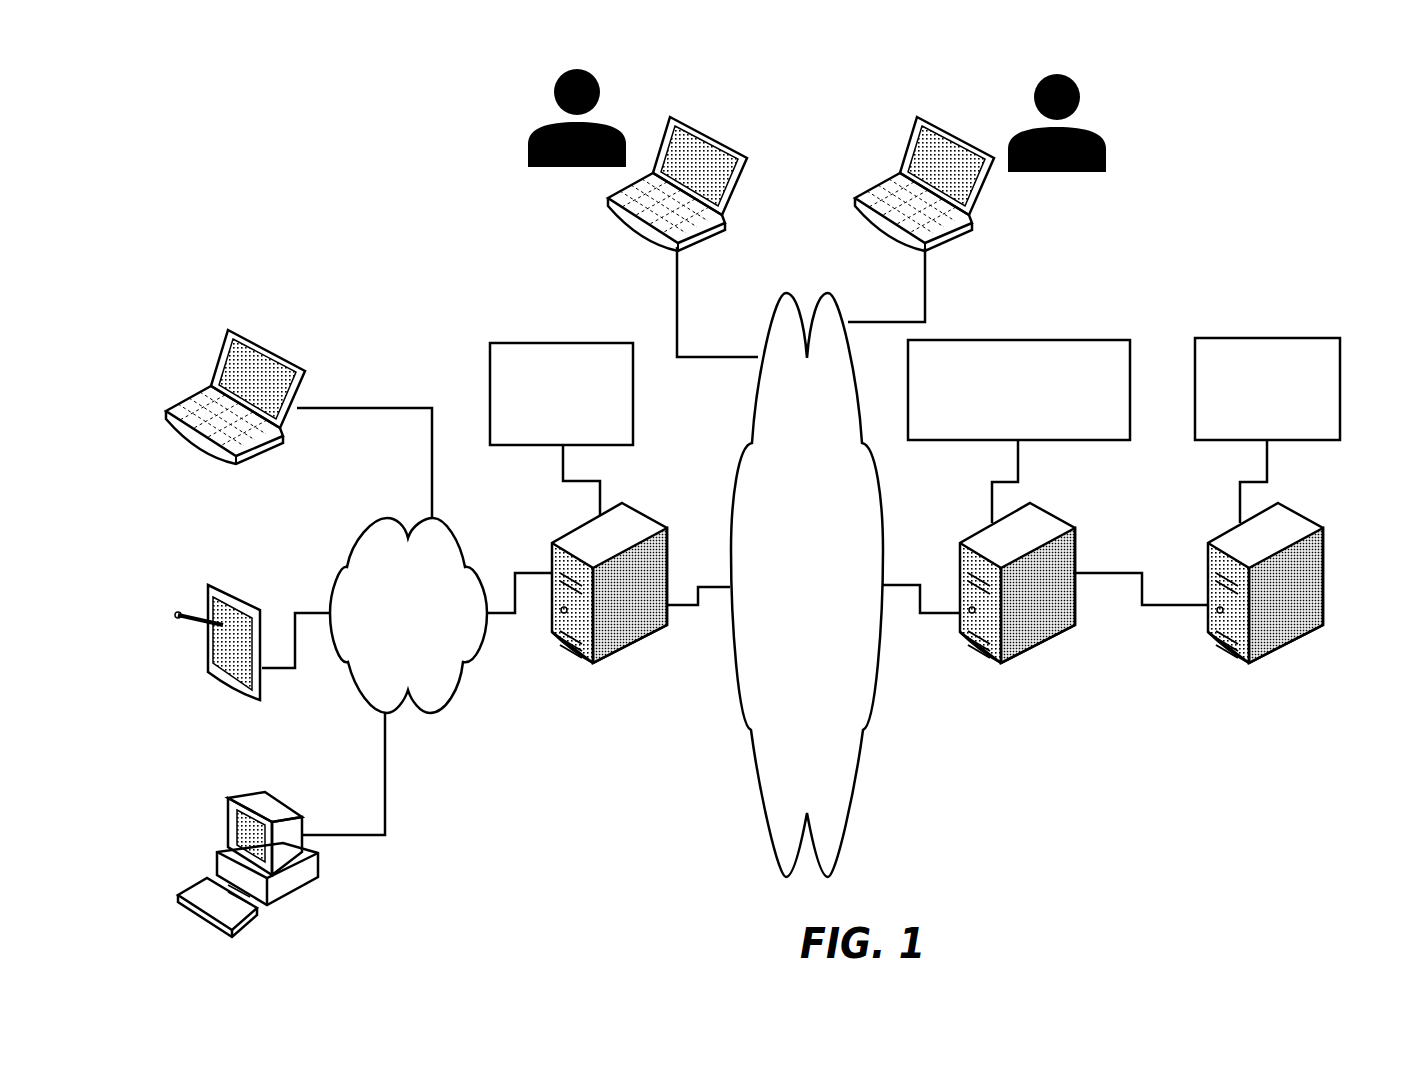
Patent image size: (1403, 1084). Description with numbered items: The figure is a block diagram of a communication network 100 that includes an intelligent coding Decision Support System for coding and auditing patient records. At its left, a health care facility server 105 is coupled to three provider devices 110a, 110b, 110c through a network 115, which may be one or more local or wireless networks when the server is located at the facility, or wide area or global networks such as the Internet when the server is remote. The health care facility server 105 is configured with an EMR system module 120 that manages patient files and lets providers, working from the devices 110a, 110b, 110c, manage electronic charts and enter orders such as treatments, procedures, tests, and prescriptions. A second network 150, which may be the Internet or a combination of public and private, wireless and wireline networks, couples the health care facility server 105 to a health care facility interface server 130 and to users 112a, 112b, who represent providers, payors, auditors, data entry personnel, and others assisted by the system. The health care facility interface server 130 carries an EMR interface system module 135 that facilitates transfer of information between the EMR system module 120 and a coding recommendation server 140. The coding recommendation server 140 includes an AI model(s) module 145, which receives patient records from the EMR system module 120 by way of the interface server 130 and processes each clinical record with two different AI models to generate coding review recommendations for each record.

The communication network 100 is at (342, 172).
The health care facility server 105 is at (575, 530).
The device 110a is at (225, 345).
The device 110b is at (220, 583).
The device 110c is at (245, 795).
The user 112a is at (560, 75).
The user 112b is at (1073, 85).
The network 115 is at (408, 615).
The EMR system module 120 is at (561, 394).
The health care facility interface server 130 is at (1047, 512).
The EMR interface system module 135 is at (1019, 390).
The coding recommendation server 140 is at (1297, 512).
The AI model(s) module 145 is at (1267, 389).
The network 150 is at (807, 585).